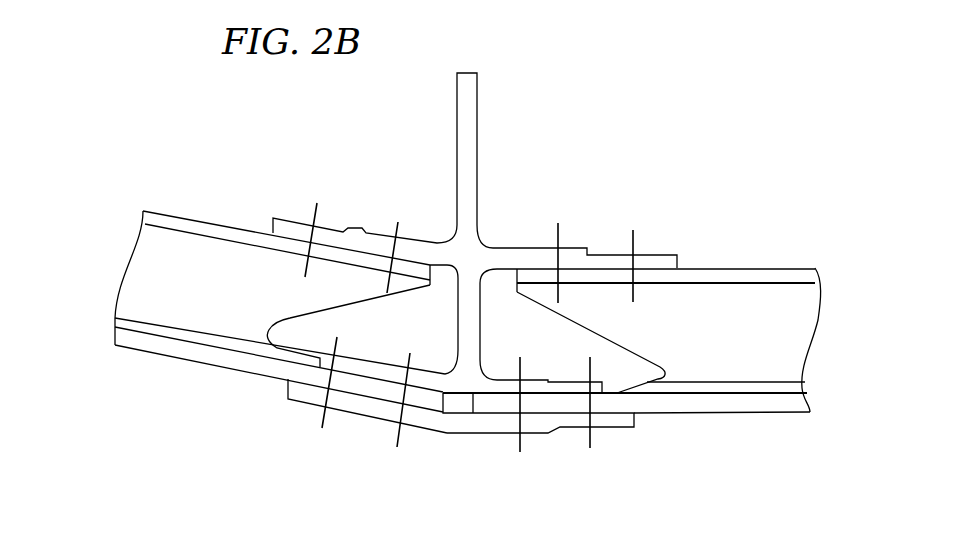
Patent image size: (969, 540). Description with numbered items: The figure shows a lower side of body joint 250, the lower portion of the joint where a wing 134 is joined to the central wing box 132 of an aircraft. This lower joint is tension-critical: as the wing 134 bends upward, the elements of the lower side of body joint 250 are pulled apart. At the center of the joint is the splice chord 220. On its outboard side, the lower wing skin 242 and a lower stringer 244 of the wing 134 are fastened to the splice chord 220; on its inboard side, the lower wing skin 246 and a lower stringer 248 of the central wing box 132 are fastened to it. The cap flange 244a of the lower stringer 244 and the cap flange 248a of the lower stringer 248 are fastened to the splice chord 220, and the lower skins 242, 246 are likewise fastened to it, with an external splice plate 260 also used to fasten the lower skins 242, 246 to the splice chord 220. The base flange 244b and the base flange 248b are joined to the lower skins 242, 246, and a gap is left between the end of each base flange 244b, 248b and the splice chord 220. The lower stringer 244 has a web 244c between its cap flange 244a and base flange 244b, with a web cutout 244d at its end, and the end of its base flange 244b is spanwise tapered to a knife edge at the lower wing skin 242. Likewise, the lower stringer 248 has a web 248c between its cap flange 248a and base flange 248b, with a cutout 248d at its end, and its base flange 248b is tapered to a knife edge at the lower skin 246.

The central wing box 132 is at (763, 458).
The wing 134 is at (145, 446).
The splice chord 220 is at (477, 89).
The lower wing skin 242 is at (157, 355).
The lower stringer 244 is at (187, 218).
The cap flange 244a is at (143, 217).
The base flange 244b is at (117, 323).
The web 244c is at (133, 268).
The web cutout 244d is at (292, 318).
The lower wing skin 246 is at (777, 413).
The lower stringer 248 is at (758, 268).
The cap flange 248a is at (817, 275).
The base flange 248b is at (802, 387).
The web 248c is at (820, 312).
The cutout 248d is at (622, 342).
The lower side of body joint 250 is at (623, 138).
The external splice plate 260 is at (533, 433).